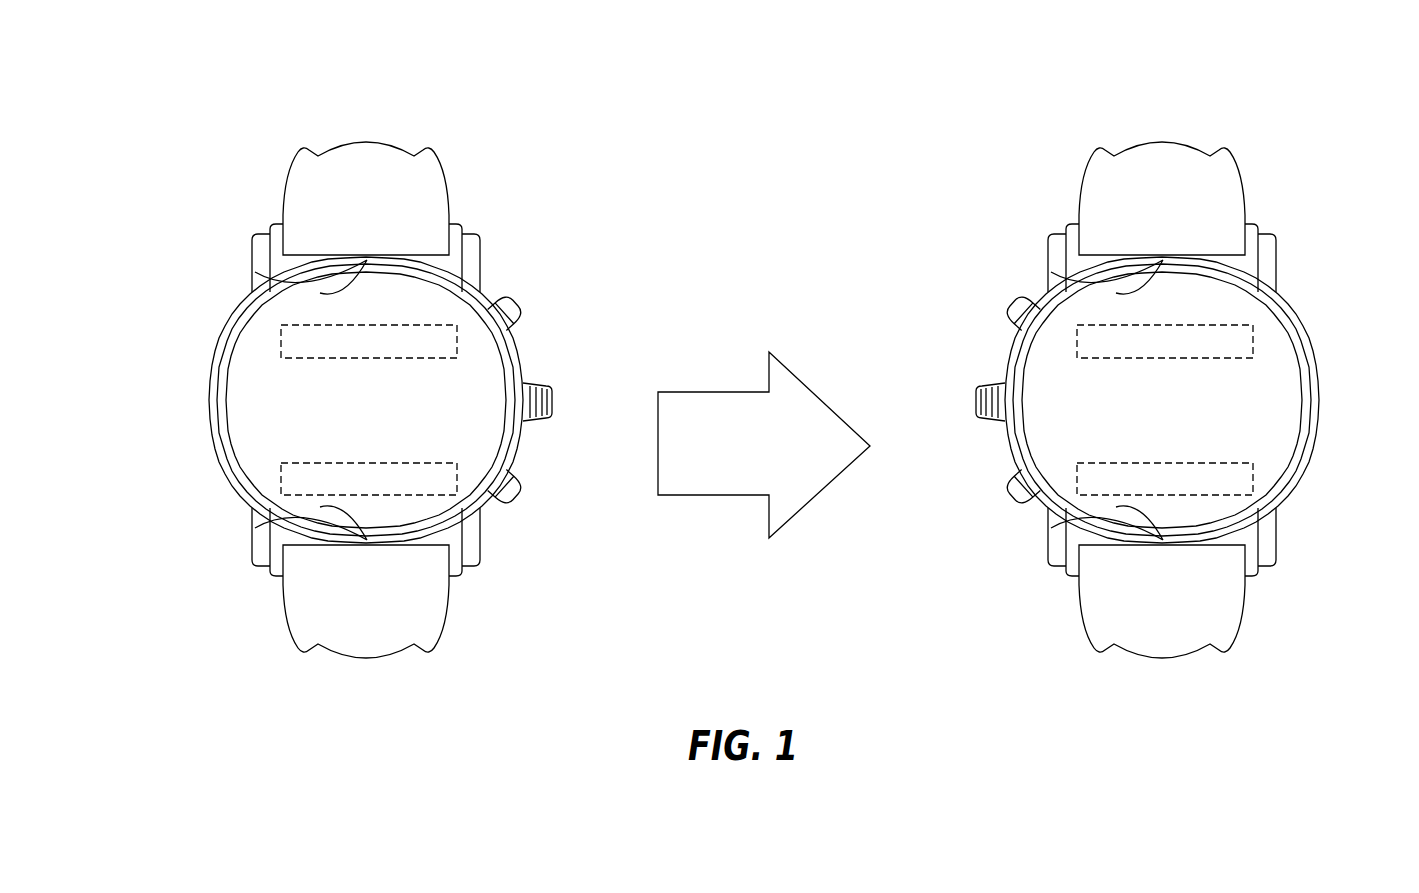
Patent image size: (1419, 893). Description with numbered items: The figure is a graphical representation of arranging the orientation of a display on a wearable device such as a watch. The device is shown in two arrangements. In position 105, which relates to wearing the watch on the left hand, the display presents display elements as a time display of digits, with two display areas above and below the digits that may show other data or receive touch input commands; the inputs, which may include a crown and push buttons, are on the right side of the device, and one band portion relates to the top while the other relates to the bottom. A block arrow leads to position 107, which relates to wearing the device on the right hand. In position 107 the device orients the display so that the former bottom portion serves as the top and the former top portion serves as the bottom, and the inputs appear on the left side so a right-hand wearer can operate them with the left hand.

The position 105 is at (240, 223).
The position 107 is at (1157, 400).